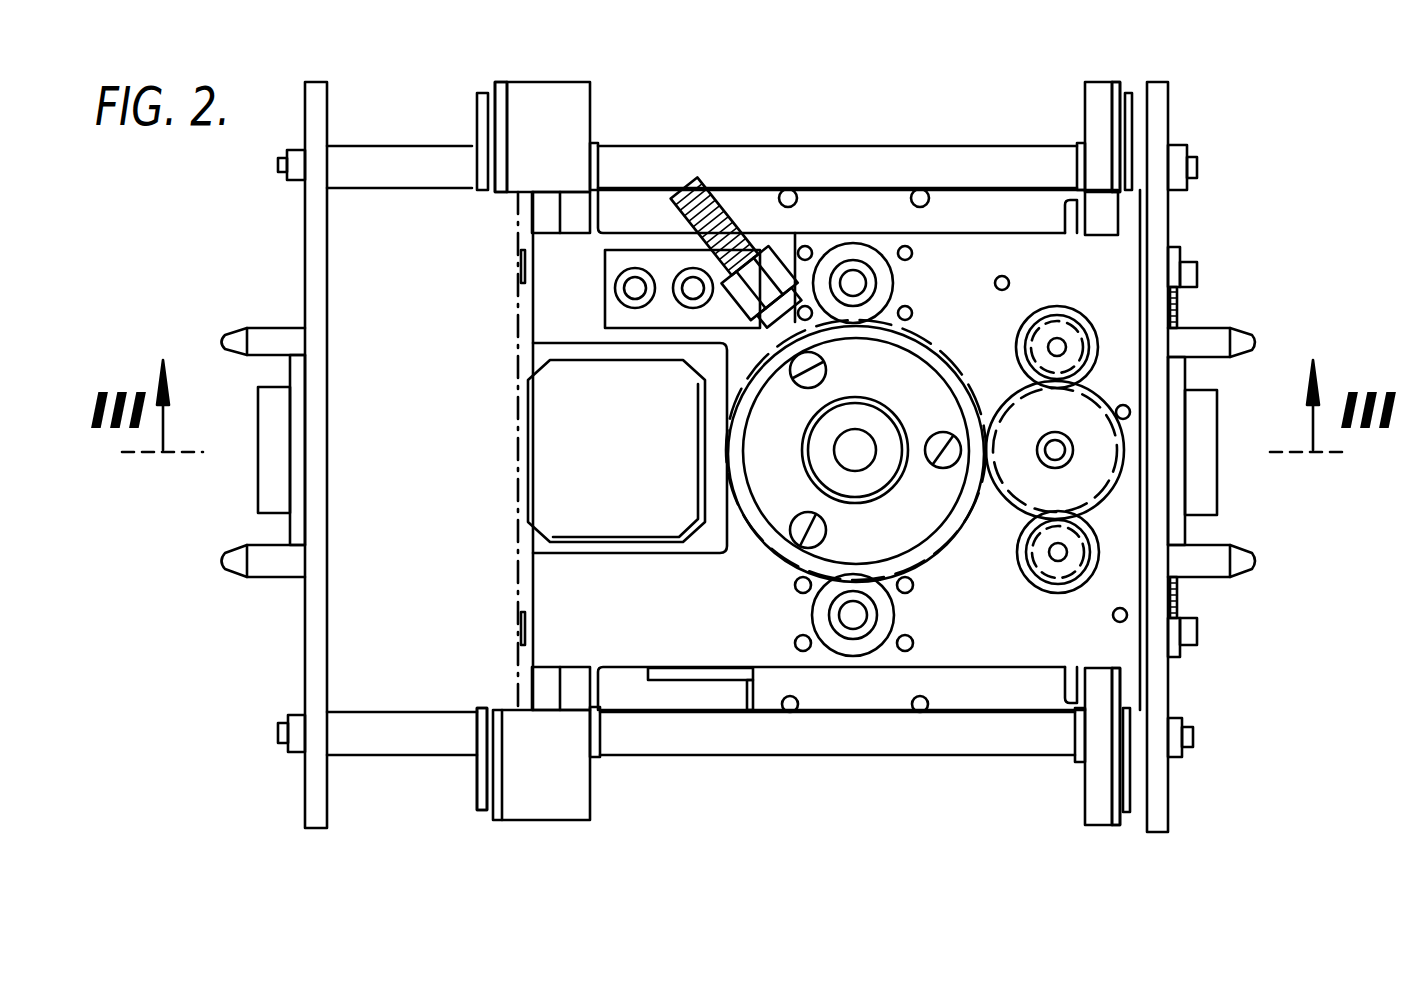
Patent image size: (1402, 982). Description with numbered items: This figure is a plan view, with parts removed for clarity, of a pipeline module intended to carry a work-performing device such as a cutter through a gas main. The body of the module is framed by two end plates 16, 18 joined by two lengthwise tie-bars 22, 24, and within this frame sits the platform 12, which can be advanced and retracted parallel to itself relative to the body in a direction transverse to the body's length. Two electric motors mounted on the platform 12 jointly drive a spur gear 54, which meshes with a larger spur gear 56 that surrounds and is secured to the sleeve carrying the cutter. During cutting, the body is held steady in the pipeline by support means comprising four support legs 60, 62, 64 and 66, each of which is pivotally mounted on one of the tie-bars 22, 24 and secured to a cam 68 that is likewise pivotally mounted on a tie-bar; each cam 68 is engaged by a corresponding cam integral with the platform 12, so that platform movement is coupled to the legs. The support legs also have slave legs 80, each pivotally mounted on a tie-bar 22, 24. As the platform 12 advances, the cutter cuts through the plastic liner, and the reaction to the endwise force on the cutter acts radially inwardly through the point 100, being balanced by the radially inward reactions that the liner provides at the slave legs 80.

The platform 12 is at (1000, 629).
The end plate 16 is at (305, 238).
The end plate 18 is at (1173, 224).
The tie-bar 22 is at (375, 152).
The tie-bar 24 is at (398, 740).
The spur gear 54 is at (1087, 472).
The spur gear 56 is at (933, 343).
The support leg 60 is at (497, 820).
The support leg 62 is at (507, 97).
The support leg 64 is at (1123, 823).
The support leg 66 is at (1125, 95).
The cam 68 is at (572, 103).
The slave leg 80 is at (483, 190).
The point 100 is at (838, 463).